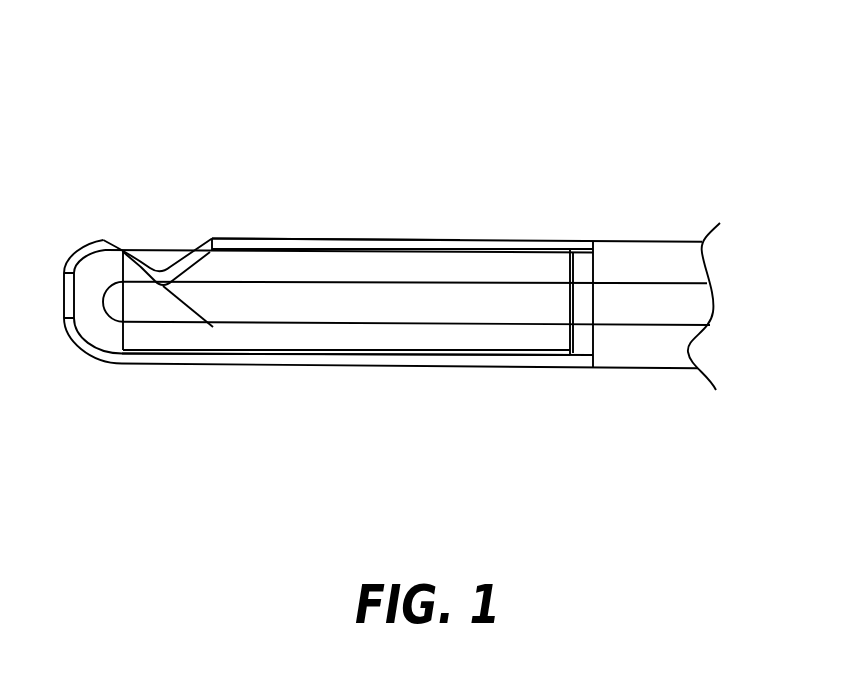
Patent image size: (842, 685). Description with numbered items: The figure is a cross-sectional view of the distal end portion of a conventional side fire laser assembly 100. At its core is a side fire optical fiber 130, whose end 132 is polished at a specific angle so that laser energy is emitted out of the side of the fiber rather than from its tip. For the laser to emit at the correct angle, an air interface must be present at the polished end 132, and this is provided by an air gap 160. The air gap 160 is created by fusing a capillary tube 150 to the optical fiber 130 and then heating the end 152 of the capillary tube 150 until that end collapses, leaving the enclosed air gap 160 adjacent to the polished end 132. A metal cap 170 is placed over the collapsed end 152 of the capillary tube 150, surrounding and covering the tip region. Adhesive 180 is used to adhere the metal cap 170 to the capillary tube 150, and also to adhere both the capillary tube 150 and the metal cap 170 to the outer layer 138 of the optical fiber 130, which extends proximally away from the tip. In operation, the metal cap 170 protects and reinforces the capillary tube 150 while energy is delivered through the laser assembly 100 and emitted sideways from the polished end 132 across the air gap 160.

The side fire laser assembly 100 is at (608, 90).
The side fire optical fiber 130 is at (540, 298).
The end of the optical fiber 132 is at (188, 317).
The outer layer of the optical fiber 138 is at (645, 265).
The capillary tube 150 is at (410, 274).
The end of the capillary tube 152 is at (87, 298).
The air gap 160 is at (153, 308).
The metal cap 170 is at (261, 240).
The adhesive 180 is at (568, 355).